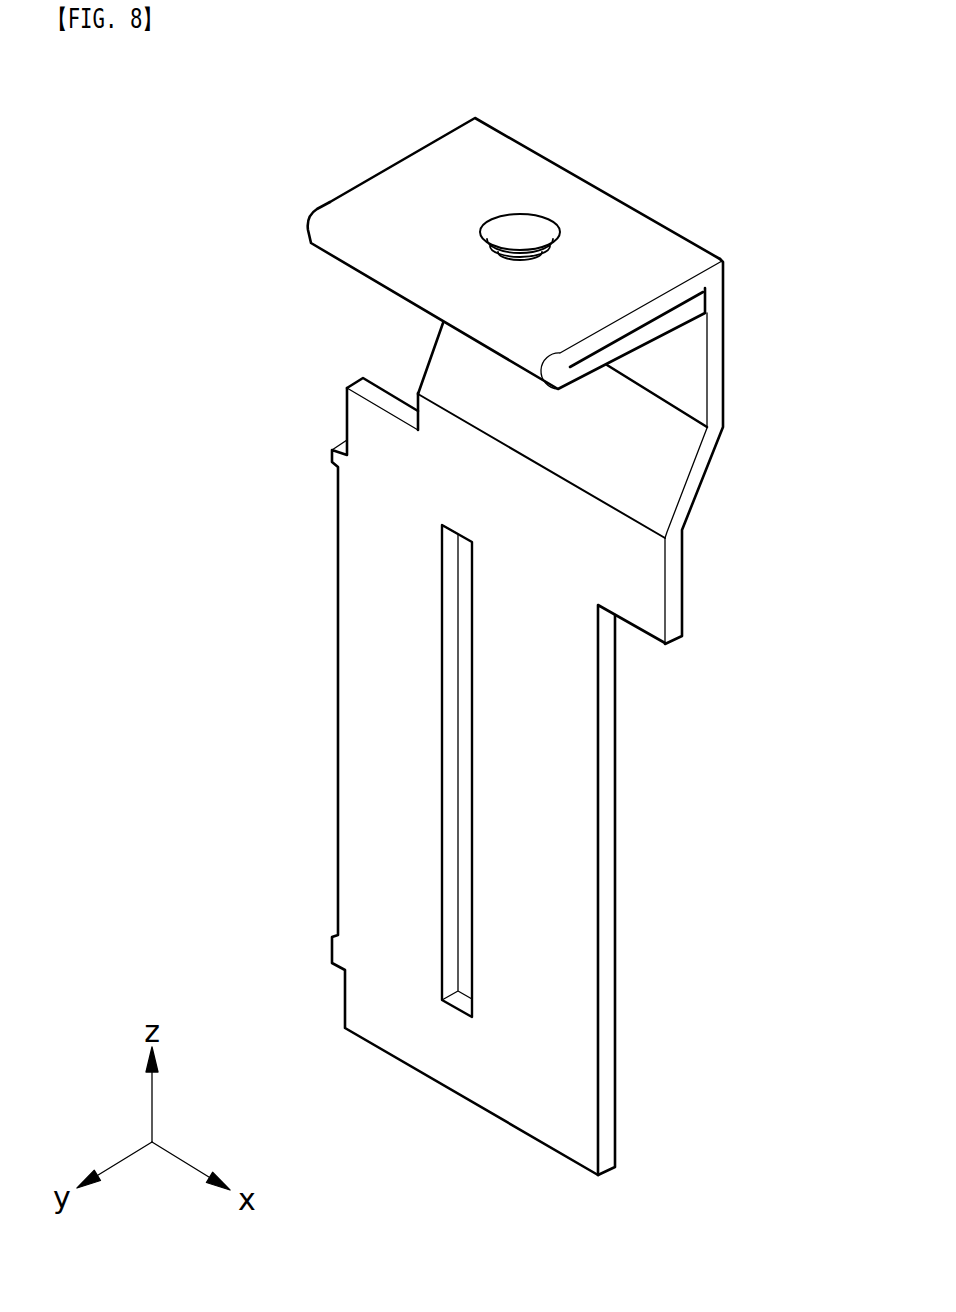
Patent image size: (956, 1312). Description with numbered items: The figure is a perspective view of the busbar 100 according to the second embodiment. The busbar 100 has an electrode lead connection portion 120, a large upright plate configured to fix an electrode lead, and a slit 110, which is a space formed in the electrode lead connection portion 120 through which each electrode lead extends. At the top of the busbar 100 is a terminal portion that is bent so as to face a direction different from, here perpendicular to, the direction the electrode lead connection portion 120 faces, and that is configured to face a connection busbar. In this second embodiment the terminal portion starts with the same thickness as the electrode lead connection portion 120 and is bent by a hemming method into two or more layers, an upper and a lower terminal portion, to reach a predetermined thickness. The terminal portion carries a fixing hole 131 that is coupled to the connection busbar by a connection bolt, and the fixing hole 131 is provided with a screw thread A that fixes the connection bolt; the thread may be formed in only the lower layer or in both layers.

The busbar 100 is at (257, 83).
The slit 110 is at (467, 790).
The electrode lead connection portion 120 is at (575, 892).
The fixing hole 131 is at (520, 215).
The screw thread A is at (503, 220).